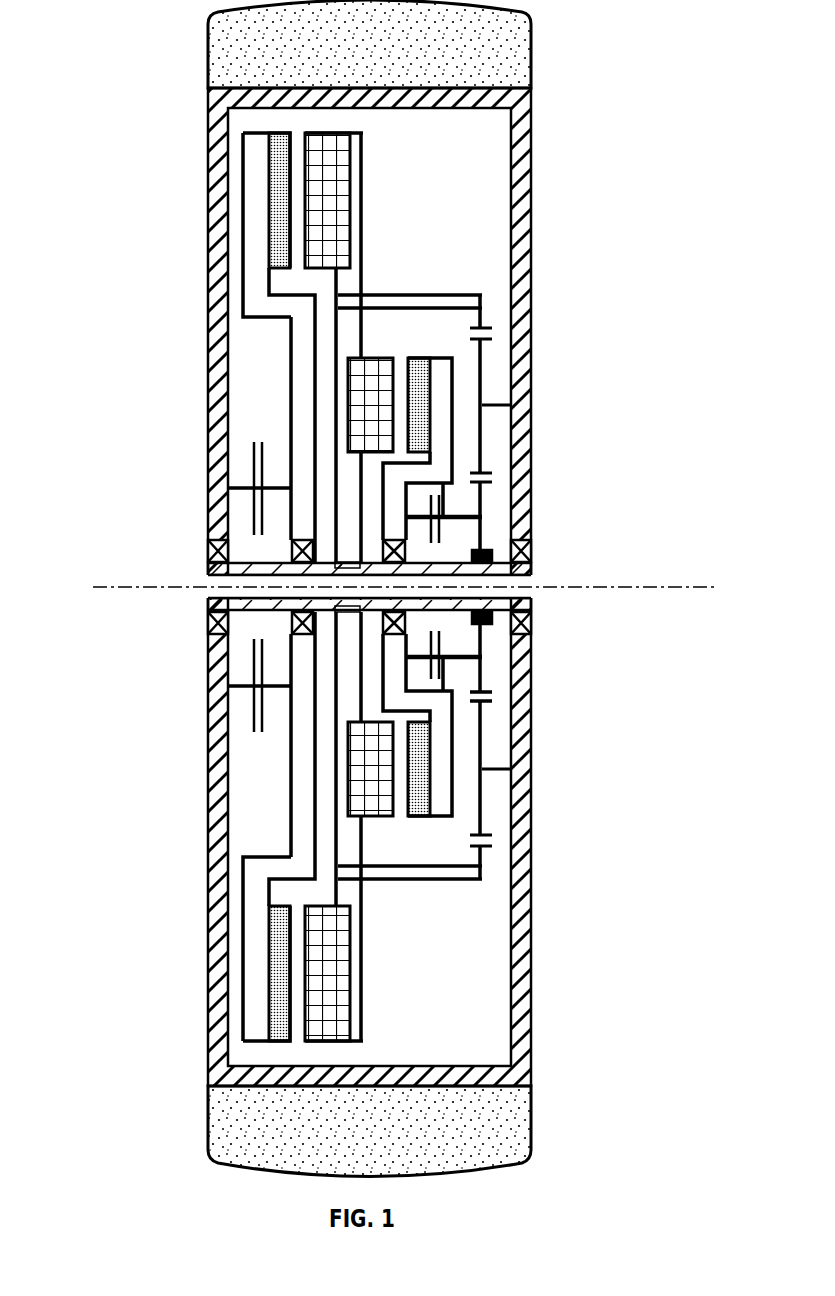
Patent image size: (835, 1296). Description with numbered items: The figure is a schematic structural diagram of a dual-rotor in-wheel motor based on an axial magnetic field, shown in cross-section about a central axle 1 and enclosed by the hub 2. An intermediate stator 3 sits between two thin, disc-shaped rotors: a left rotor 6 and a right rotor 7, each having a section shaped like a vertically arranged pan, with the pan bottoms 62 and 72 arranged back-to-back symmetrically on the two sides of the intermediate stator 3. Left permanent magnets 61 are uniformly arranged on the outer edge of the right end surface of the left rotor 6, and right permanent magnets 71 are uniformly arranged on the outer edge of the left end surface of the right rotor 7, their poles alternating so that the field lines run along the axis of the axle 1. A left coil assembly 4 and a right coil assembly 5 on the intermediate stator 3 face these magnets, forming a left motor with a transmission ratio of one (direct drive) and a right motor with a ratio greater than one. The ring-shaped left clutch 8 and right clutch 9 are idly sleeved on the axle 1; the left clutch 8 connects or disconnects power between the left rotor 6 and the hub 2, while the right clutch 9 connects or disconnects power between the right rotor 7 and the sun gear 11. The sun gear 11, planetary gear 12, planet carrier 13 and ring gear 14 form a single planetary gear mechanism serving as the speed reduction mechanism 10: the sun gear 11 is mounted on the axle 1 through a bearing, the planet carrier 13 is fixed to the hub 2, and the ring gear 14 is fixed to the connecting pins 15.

The axle 1 is at (234, 577).
The hub 2 is at (221, 852).
The intermediate stator 3 is at (349, 281).
The left coil assembly 4 is at (317, 187).
The right coil assembly 5 is at (369, 370).
The left rotor 6 is at (257, 303).
The left permanent magnet 61 is at (277, 150).
The bottom of the pan of the left rotor 62 is at (292, 680).
The right rotor 7 is at (437, 467).
The right permanent magnet 71 is at (418, 417).
The bottom of the pan of the right rotor 72 is at (395, 664).
The left clutch 8 is at (255, 482).
The right clutch 9 is at (437, 514).
The speed reduction mechanism 10 is at (483, 333).
The sun gear 11 is at (480, 677).
The planetary gear 12 is at (480, 742).
The planet carrier 13 is at (532, 782).
The ring gear 14 is at (483, 852).
The connecting pin 15 is at (403, 873).